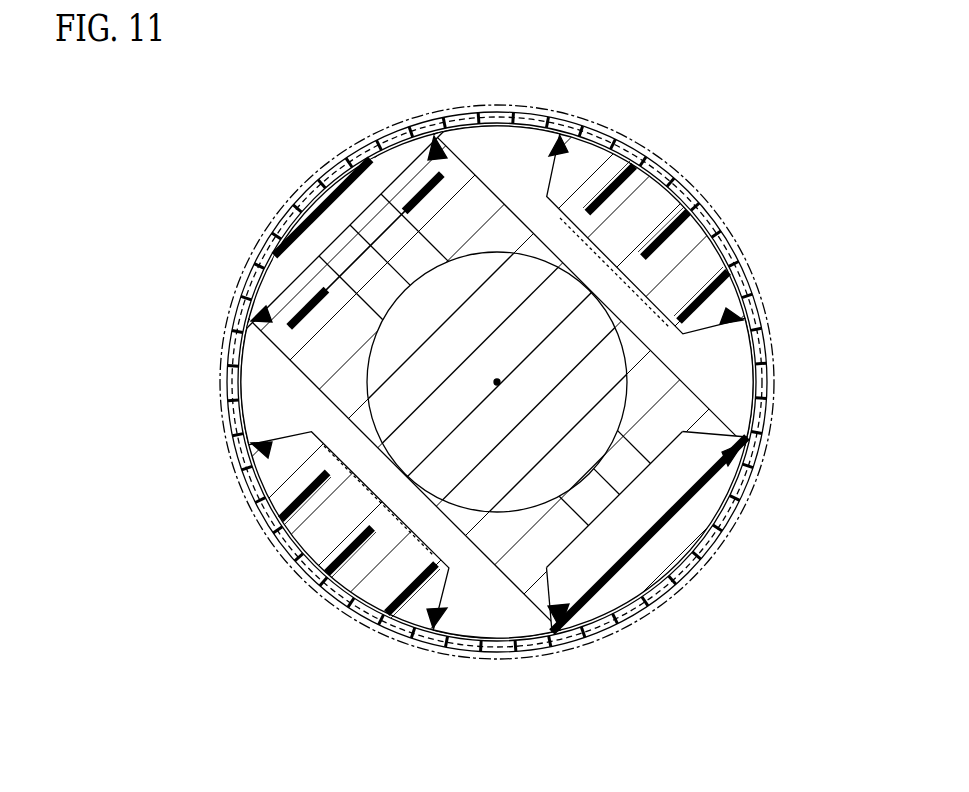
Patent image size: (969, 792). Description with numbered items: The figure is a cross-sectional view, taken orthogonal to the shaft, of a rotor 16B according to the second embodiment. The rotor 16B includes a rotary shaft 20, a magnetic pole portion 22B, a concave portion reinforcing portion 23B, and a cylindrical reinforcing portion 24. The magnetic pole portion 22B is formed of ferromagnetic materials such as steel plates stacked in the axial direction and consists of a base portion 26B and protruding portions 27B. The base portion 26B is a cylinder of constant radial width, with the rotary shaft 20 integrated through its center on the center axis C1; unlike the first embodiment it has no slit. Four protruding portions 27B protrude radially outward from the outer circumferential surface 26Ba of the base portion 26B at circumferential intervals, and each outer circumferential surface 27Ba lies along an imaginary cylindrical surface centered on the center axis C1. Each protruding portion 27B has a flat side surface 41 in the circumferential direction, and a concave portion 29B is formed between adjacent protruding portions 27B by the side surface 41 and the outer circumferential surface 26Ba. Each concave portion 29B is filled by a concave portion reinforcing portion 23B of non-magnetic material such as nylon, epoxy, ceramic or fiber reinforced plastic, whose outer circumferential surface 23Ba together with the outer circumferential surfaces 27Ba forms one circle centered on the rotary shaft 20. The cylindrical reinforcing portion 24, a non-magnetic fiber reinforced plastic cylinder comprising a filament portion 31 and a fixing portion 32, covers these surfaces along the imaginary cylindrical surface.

The rotor 16B is at (238, 172).
The rotary shaft 20 is at (556, 324).
The magnetic pole portion 22B is at (600, 205).
The concave portion reinforcing portion 23B is at (615, 235).
The outer circumferential surface 23Ba is at (712, 288).
The cylindrical reinforcing portion 24 is at (764, 445).
The base portion 26B is at (385, 195).
The outer circumferential surface 26Ba is at (640, 252).
The protruding portion 27B is at (497, 128).
The outer circumferential surface 27Ba is at (565, 125).
The concave portion 29B is at (672, 278).
The filament portion 31 is at (757, 462).
The fixing portion 32 is at (774, 425).
The side surface 41 is at (418, 138).
The center axis C1 is at (497, 382).